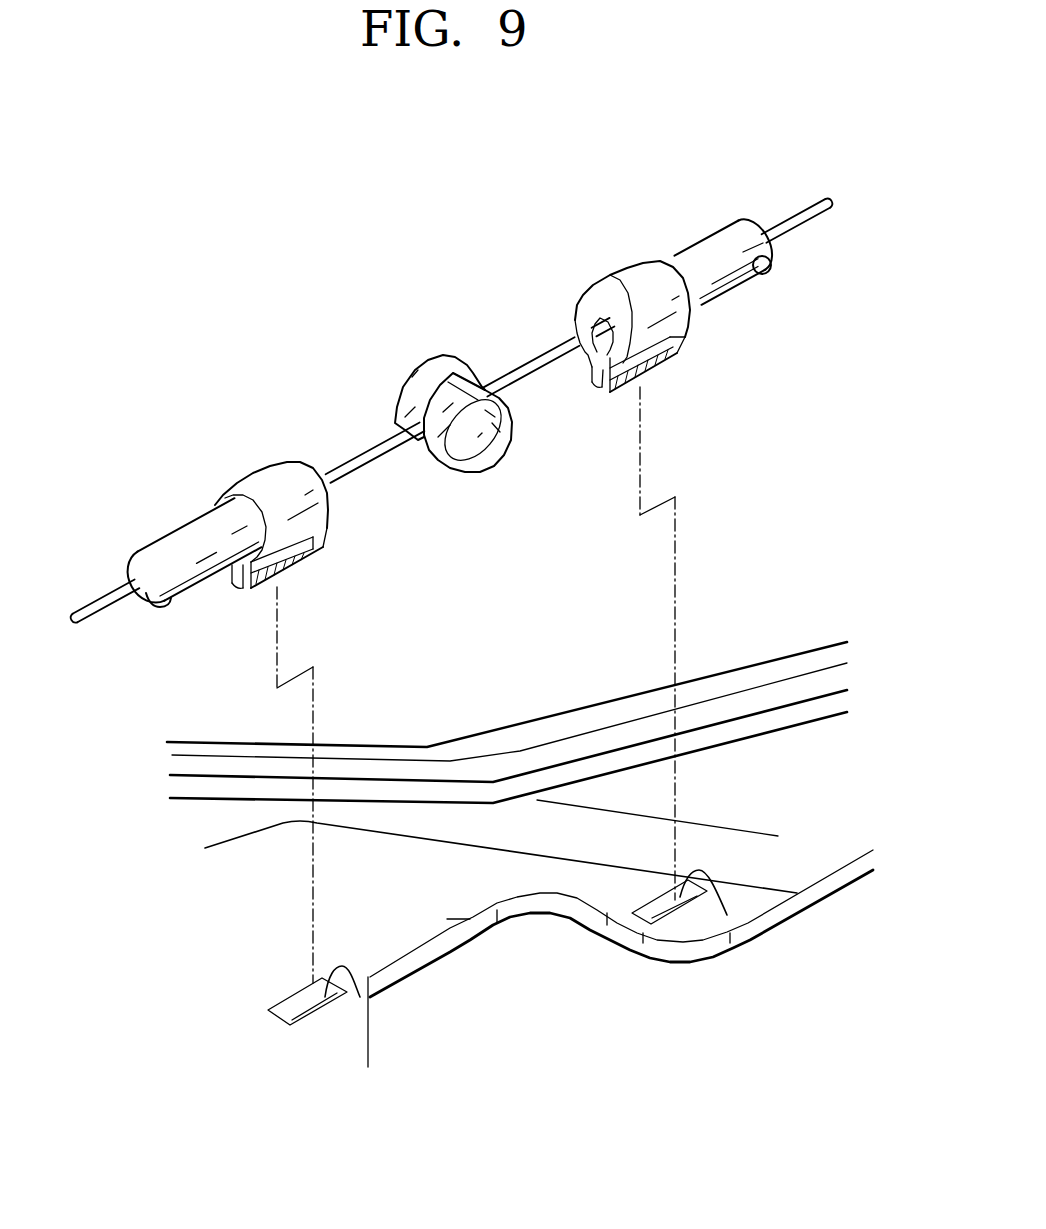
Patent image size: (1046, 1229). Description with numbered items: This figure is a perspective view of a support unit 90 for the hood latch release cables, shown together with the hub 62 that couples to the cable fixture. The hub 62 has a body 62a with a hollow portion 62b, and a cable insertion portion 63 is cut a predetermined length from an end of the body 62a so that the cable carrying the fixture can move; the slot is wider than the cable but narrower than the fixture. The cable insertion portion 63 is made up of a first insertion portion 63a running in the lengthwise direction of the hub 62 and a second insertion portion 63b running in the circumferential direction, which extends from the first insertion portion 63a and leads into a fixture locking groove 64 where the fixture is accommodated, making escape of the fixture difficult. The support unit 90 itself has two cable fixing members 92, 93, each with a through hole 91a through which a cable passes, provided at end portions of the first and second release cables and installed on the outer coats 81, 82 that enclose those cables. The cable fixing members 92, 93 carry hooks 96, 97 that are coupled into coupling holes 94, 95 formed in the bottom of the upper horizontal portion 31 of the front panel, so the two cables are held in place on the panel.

The upper horizontal portion 31 is at (491, 930).
The hub 62 is at (469, 402).
The body 62a is at (440, 457).
The hollow portion 62b is at (474, 447).
The cable insertion portion 63 is at (428, 327).
The first insertion portion 63a is at (467, 378).
The second insertion portion 63b is at (484, 292).
The fixture locking groove 64 is at (395, 405).
The outer coat 81 is at (178, 545).
The outer coat 82 is at (727, 293).
The support unit 90 is at (633, 294).
The clip hole 91a is at (592, 293).
The cable fixing member 92 is at (293, 515).
The cable fixing member 93 is at (632, 280).
The coupling hole 94 is at (360, 997).
The coupling hole 95 is at (727, 915).
The hook 96 is at (292, 568).
The hook 97 is at (653, 372).